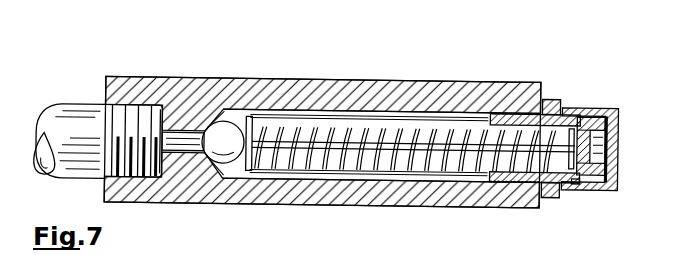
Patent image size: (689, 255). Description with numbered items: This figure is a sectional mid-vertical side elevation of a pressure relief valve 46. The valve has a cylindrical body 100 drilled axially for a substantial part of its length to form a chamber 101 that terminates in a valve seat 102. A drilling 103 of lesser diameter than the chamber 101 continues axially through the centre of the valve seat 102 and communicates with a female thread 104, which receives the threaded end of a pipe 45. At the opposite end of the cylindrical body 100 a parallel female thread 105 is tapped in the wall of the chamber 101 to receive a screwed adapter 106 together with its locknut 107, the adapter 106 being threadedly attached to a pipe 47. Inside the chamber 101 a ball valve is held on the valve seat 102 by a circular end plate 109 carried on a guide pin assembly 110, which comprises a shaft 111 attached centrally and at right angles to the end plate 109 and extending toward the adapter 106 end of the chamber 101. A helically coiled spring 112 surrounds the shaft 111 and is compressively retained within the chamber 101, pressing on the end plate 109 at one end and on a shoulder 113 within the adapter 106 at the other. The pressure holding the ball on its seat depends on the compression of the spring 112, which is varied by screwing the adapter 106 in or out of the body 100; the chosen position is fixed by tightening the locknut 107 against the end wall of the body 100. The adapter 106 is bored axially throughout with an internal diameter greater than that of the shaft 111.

The pipe 45 is at (70, 103).
The pressure relief valve 46 is at (308, 76).
The pipe 47 is at (578, 100).
The cylindrical body 100 is at (372, 88).
The chamber 101 is at (433, 109).
The valve seat 102 is at (217, 121).
The drilling 103 is at (183, 135).
The female thread 104 is at (128, 106).
The parallel female thread 105 is at (507, 108).
The screwed adapter 106 is at (236, 124).
The locknut 107 is at (552, 93).
The end plate 109 is at (248, 170).
The guide pin assembly 110 is at (307, 165).
The shaft 111 is at (383, 164).
The helically coiled spring 112 is at (336, 148).
The shoulder 113 is at (583, 177).